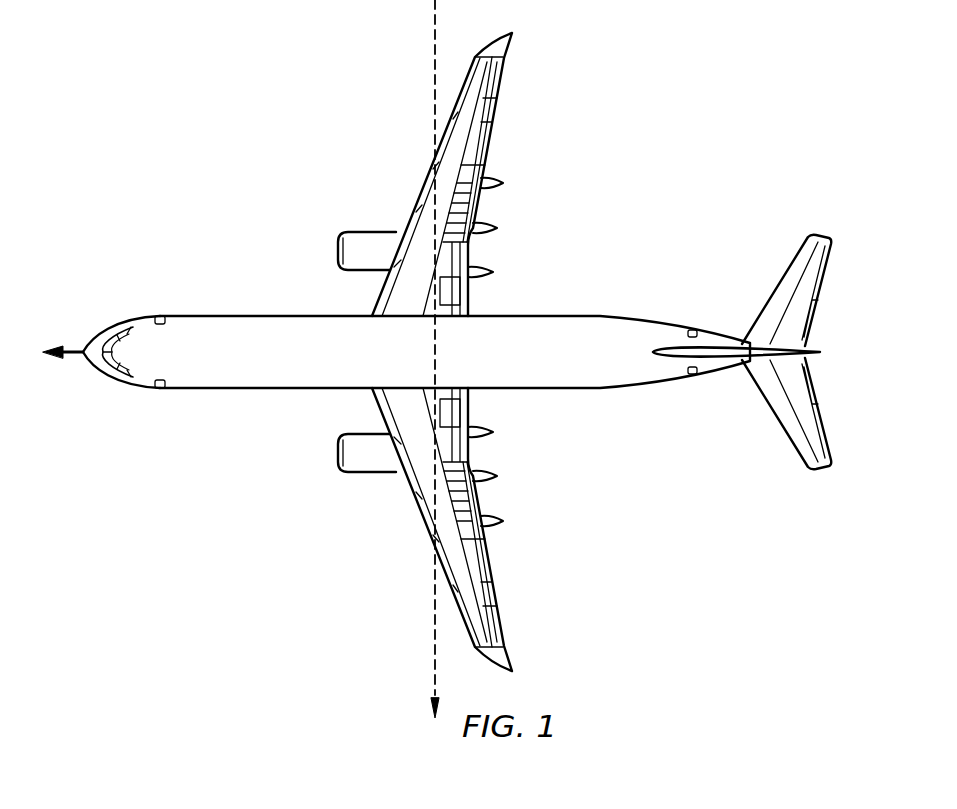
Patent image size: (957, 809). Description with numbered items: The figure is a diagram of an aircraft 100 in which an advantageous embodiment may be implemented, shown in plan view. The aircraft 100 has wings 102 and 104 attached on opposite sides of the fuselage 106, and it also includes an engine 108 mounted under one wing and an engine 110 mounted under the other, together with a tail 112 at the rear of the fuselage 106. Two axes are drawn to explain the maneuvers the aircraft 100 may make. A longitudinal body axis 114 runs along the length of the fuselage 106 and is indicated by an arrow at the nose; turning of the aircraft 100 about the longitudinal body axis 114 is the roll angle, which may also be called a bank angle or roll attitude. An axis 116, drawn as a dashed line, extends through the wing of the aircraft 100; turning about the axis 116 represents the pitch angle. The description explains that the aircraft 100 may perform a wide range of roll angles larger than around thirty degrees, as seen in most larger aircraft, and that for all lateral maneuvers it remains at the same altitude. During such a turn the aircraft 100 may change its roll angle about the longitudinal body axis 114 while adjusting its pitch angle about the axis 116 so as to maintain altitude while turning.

The aircraft 100 is at (331, 151).
The wing 102 is at (488, 152).
The wing 104 is at (470, 557).
The fuselage 106 is at (252, 316).
The engine 108 is at (338, 247).
The engine 110 is at (338, 457).
The tail 112 is at (793, 272).
The longitudinal body axis 114 is at (72, 350).
The axis 116 is at (433, 73).